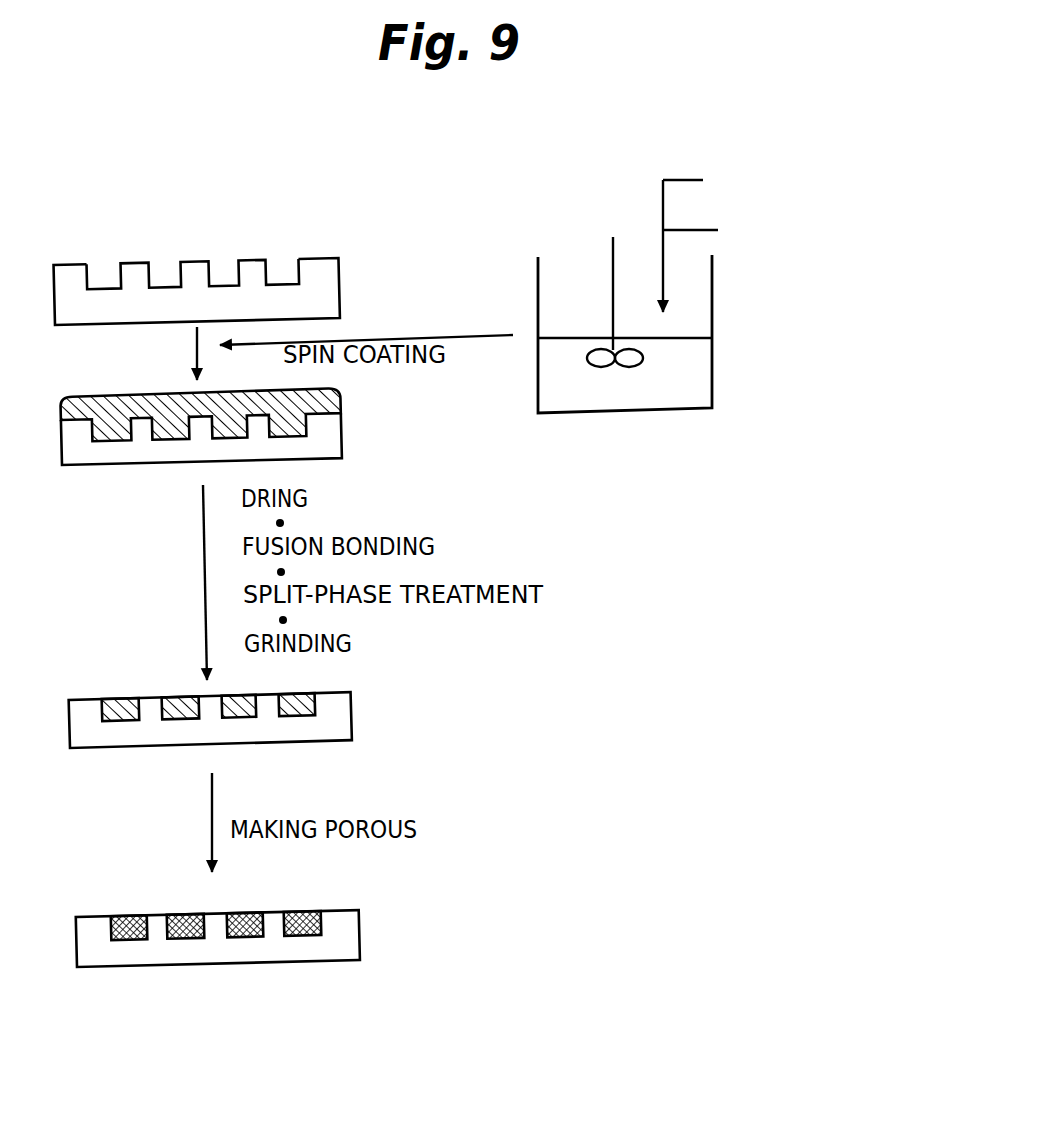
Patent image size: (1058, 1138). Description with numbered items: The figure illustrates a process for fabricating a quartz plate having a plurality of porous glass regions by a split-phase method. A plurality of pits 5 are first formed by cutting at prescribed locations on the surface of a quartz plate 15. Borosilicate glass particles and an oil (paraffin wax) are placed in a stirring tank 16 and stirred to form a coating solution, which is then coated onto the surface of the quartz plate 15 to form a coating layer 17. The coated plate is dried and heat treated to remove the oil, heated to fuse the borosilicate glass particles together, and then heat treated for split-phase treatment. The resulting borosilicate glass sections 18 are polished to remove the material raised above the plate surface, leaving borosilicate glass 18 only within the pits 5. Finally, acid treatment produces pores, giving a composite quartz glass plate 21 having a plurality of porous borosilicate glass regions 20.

The pits 5 is at (108, 272).
The quartz plate 15 is at (240, 246).
The stirring tank 16 is at (683, 414).
The coating layer 17 is at (317, 393).
The borosilicate glass sections 18 is at (300, 690).
The porous borosilicate glass regions 20 is at (305, 907).
The composite quartz glass plate 21 is at (431, 960).